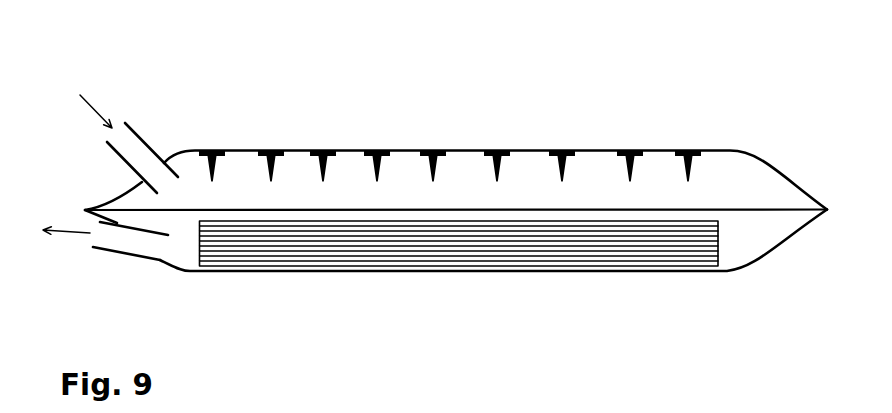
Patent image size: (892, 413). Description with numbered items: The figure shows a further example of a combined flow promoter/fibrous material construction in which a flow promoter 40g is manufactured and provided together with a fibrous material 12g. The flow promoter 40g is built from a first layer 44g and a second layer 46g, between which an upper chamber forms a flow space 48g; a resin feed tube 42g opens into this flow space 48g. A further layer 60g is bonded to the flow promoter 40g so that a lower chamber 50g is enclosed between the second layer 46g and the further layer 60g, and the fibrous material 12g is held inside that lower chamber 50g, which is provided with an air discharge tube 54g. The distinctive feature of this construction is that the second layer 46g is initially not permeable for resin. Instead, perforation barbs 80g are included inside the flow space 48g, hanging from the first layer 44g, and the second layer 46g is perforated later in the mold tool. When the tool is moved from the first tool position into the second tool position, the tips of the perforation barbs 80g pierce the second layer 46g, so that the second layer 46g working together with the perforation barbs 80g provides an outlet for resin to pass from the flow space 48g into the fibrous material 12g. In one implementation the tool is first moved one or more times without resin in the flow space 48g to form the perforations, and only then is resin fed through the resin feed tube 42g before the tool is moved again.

The flow promoter 40g is at (610, 123).
The resin feed tube 42g is at (138, 135).
The first layer 44g is at (352, 150).
The second layer 46g is at (311, 209).
The flow space 48g is at (233, 172).
The lower chamber 50g is at (703, 204).
The air discharge tube 54g is at (122, 253).
The further layer 60g is at (747, 267).
The perforation barbs 80g is at (358, 170).
The fibrous material 12g is at (635, 248).